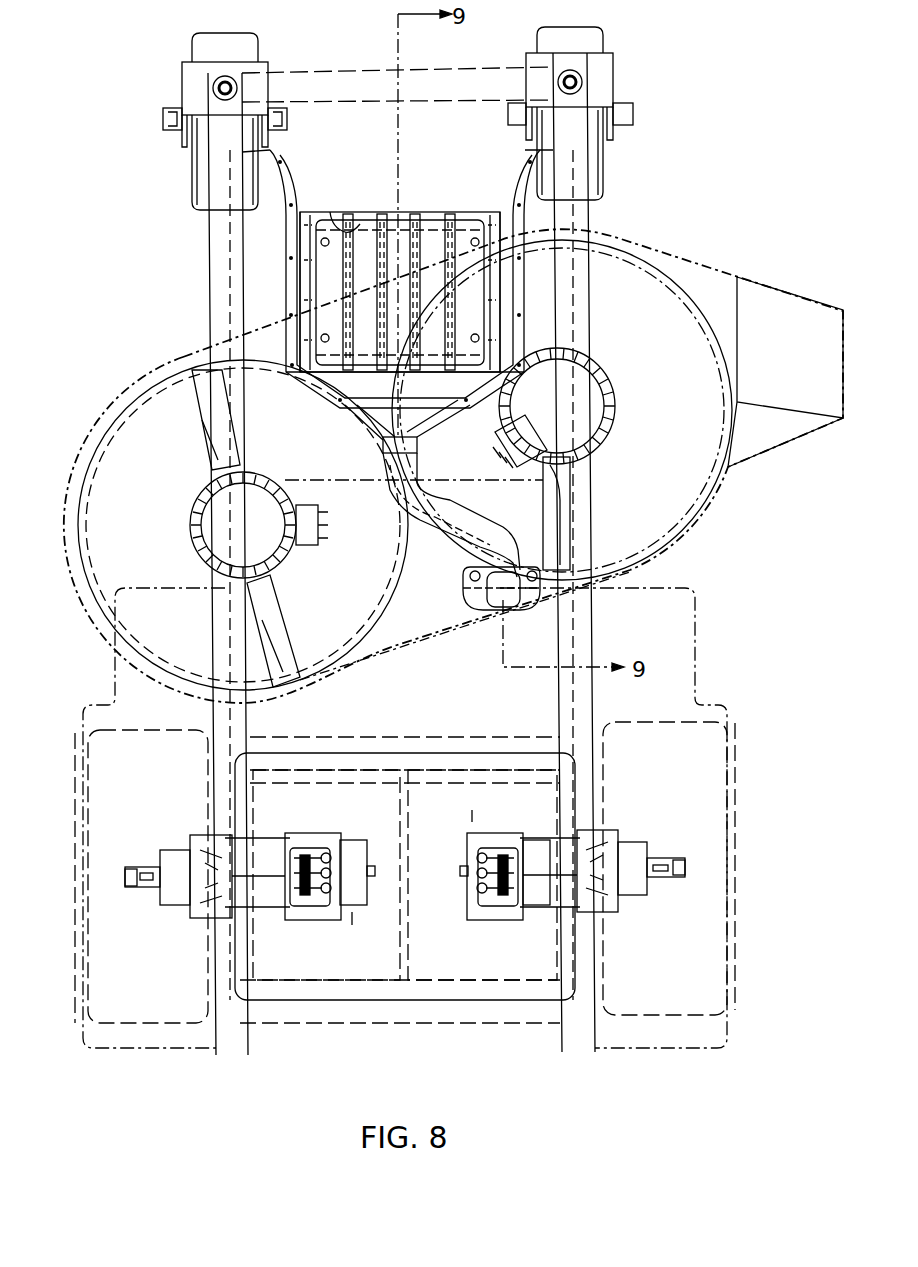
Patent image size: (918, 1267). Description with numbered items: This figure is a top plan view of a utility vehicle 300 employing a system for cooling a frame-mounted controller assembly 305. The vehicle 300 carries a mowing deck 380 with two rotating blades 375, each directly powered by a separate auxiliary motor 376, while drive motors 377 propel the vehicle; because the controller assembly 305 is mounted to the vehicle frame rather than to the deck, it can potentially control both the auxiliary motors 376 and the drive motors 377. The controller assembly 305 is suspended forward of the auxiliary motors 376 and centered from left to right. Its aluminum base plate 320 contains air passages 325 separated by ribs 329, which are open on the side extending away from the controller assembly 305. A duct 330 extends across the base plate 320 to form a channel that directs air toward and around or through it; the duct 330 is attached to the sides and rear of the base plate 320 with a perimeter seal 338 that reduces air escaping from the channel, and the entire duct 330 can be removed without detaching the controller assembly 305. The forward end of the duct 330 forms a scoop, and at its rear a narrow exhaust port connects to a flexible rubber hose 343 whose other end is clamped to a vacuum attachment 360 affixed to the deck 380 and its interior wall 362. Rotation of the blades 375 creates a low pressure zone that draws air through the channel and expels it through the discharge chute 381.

The utility vehicle 300 is at (110, 106).
The controller assembly 305 is at (352, 228).
The base plate 320 is at (495, 216).
The air passages 325 is at (367, 256).
The ribs 329 is at (356, 287).
The duct 330 is at (443, 182).
The perimeter seal 338 is at (345, 215).
The flexible hose 343 is at (400, 490).
The vacuum attachment 360 is at (483, 618).
The interior wall 362 is at (420, 645).
The rotating blades 375 is at (292, 615).
The auxiliary motors 376 is at (292, 534).
The drive motors 377 is at (328, 832).
The mowing deck 380 is at (168, 362).
The discharge chute 381 is at (765, 315).